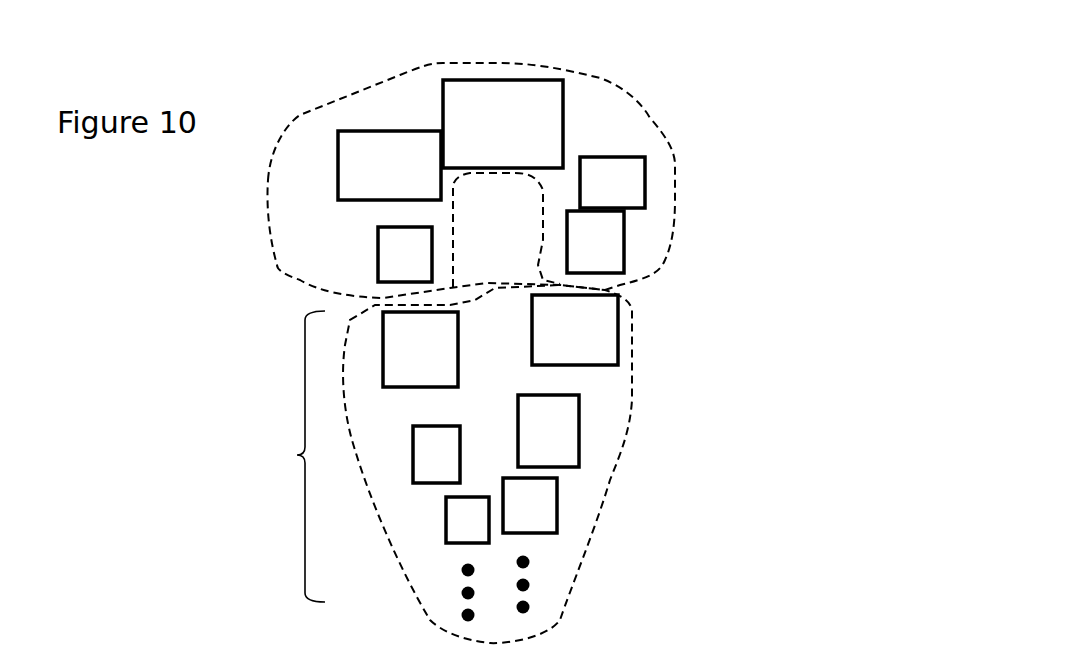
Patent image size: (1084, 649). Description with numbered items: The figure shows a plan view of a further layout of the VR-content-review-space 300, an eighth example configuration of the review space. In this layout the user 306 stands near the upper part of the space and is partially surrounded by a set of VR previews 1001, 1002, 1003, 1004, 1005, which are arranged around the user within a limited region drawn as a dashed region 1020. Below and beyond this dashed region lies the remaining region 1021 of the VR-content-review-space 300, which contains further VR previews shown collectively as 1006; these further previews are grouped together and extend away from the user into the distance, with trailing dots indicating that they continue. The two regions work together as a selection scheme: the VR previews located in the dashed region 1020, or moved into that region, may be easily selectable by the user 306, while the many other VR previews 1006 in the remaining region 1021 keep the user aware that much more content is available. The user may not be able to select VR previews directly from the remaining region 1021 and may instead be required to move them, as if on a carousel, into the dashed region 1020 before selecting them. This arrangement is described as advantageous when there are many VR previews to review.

The VR-content-review-space 300 is at (168, 226).
The user 306 is at (503, 205).
The VR preview 1001 is at (400, 238).
The VR preview 1002 is at (387, 145).
The VR preview 1003 is at (518, 90).
The VR preview 1004 is at (628, 167).
The VR preview 1005 is at (603, 256).
The further VR previews 1006 is at (297, 455).
The dashed region 1020 is at (645, 94).
The remaining region 1021 is at (640, 345).